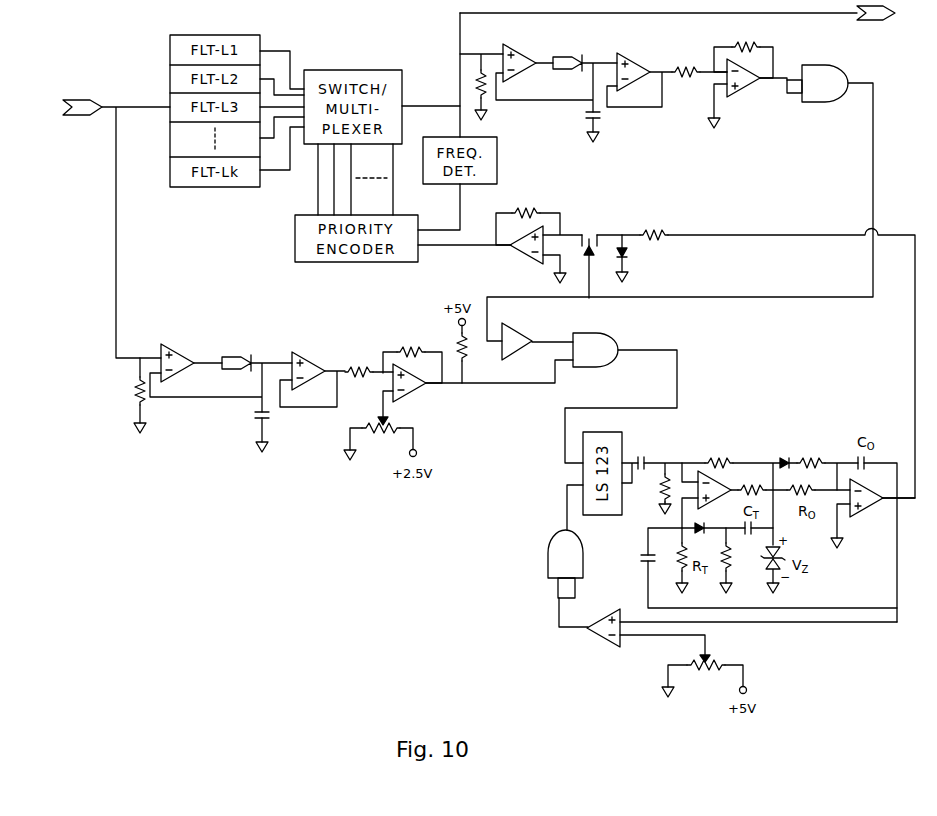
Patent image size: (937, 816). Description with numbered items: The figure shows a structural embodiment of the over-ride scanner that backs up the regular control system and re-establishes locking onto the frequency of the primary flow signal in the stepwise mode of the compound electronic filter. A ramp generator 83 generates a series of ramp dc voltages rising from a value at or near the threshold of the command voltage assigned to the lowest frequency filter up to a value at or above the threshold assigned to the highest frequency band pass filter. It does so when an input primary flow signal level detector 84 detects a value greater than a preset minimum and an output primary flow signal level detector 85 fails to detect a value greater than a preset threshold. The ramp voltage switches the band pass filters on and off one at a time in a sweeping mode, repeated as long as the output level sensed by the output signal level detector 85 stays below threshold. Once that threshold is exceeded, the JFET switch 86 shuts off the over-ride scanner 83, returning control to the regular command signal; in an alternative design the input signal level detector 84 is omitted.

The ramp generator 83 is at (558, 525).
The input primary flow signal level detector 84 is at (237, 405).
The output primary flow signal level detector 85 is at (691, 90).
The JFET switch 86 is at (590, 233).